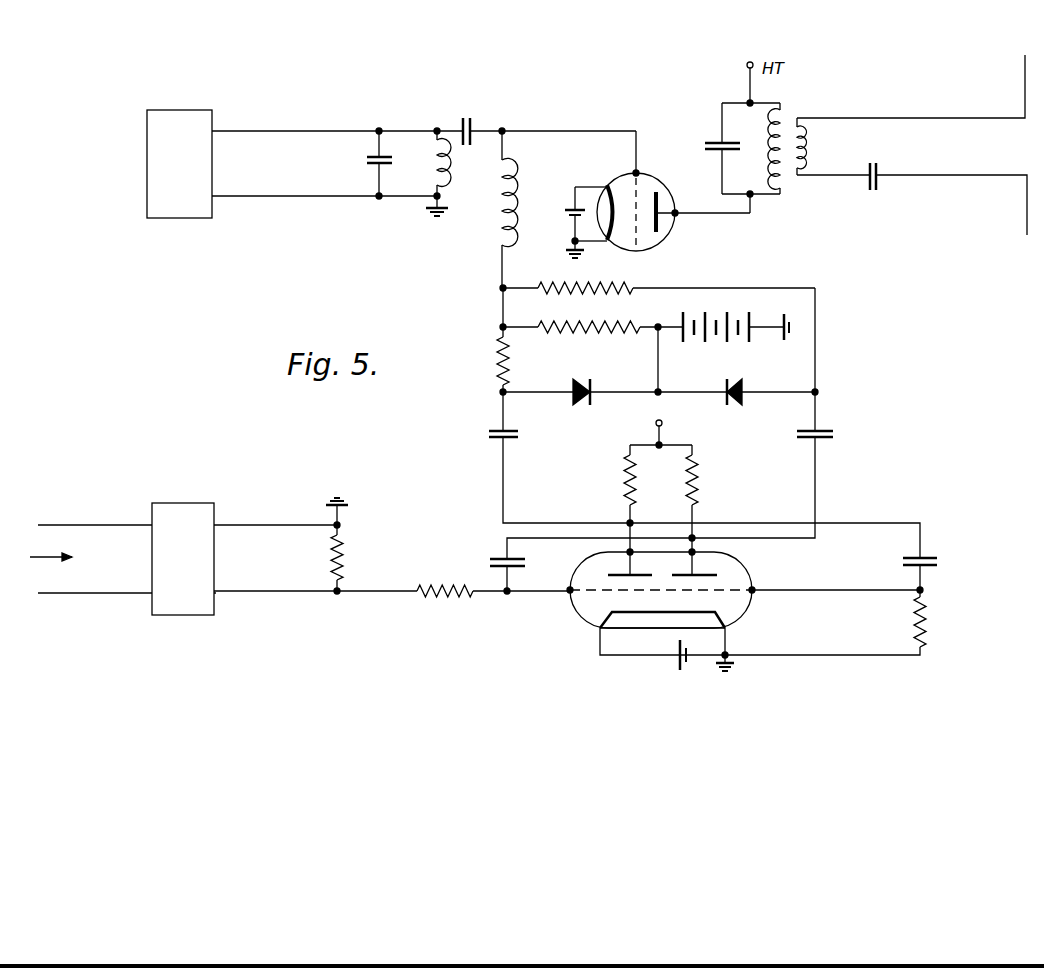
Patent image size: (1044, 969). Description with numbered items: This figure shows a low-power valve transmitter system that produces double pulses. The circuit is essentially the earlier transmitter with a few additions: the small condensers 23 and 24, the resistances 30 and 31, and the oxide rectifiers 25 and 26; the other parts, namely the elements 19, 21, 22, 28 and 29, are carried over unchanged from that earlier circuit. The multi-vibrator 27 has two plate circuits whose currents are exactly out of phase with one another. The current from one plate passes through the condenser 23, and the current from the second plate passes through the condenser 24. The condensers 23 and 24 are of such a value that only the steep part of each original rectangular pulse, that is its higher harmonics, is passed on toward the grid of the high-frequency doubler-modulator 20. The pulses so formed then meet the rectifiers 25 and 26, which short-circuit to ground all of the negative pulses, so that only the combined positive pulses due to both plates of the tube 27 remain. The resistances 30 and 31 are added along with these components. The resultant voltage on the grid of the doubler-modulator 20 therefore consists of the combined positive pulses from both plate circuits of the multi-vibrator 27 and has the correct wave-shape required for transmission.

The crystal oscillator 19 is at (183, 226).
The H. F. doubler-modulator 20 is at (647, 178).
The transformer secondary winding 21 is at (787, 155).
The output terminals 22 is at (915, 145).
The small condenser 23 is at (499, 442).
The small condenser 24 is at (836, 428).
The oxide rectifier 25 is at (579, 405).
The oxide rectifier 26 is at (734, 405).
The multi-vibrator 27 is at (752, 572).
The signal amplifier 28 is at (182, 623).
The battery 29 is at (745, 326).
The resistance 30 is at (588, 286).
The resistance 31 is at (500, 358).